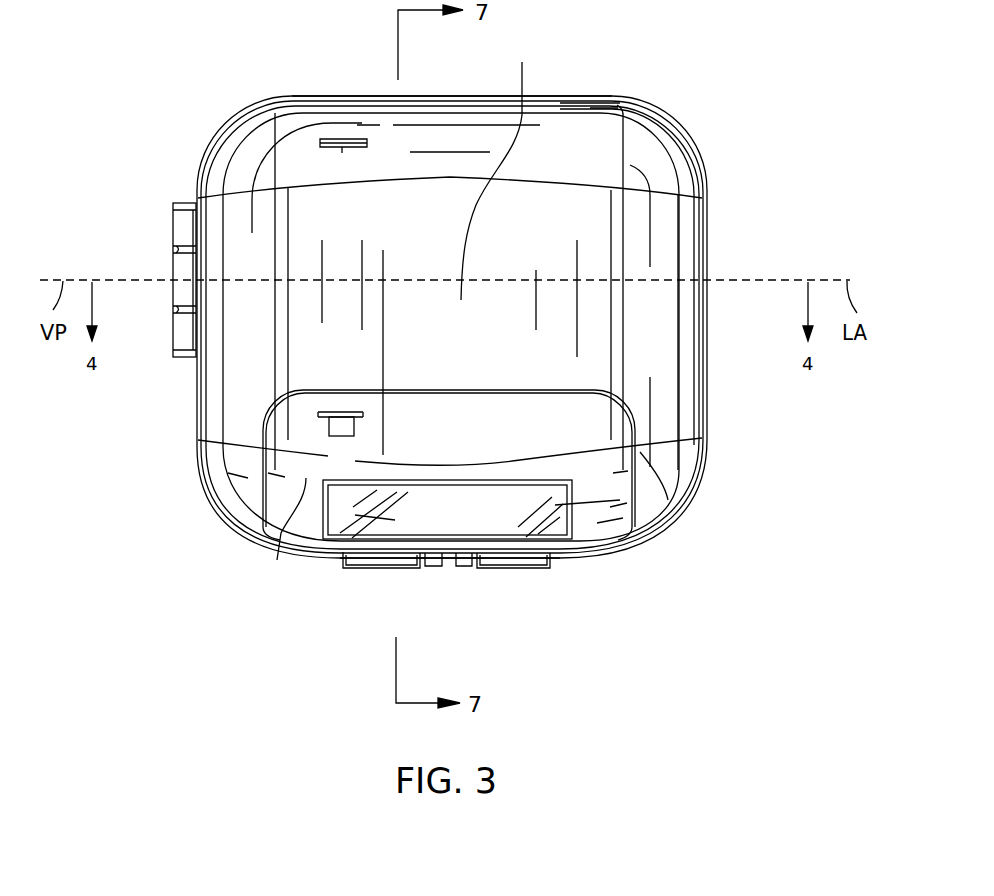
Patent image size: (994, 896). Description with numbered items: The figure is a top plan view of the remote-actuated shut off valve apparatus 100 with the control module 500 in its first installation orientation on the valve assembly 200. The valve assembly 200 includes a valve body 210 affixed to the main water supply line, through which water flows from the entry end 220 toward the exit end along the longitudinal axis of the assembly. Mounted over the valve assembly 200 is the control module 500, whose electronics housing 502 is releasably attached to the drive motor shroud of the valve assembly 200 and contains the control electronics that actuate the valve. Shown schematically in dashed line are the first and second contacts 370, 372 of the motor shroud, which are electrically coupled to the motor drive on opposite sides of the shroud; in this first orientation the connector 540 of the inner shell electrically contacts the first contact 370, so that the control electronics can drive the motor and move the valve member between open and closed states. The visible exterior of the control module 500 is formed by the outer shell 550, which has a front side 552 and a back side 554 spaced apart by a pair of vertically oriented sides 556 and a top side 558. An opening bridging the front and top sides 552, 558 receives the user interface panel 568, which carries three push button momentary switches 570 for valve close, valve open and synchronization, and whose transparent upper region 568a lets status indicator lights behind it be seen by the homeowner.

The valve apparatus 100 is at (712, 83).
The valve assembly 200 is at (180, 190).
The valve body 210 is at (185, 228).
The entry end 220 is at (182, 342).
The first contact 370 is at (342, 411).
The second contact 372 is at (342, 148).
The control module 500 is at (744, 172).
The electronics housing 502 is at (710, 239).
The connector 540 is at (357, 430).
The outer shell 550 is at (706, 352).
The front side 552 is at (600, 556).
The back side 554 is at (355, 97).
The vertically oriented sides 556 is at (198, 426).
The top side 558 is at (500, 169).
The user interface panel 568 is at (277, 560).
The upper region of user interface panel 568a is at (397, 518).
The push button momentary switches 570 is at (398, 572).